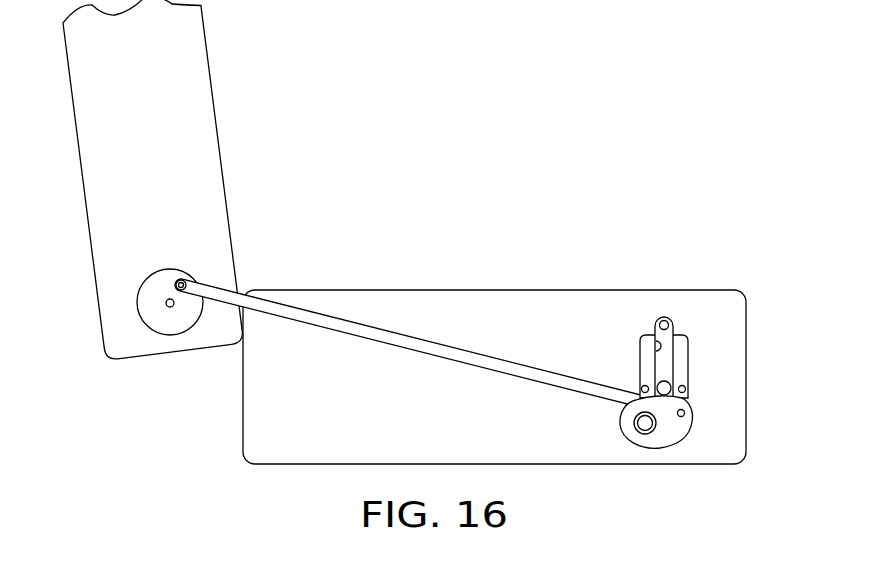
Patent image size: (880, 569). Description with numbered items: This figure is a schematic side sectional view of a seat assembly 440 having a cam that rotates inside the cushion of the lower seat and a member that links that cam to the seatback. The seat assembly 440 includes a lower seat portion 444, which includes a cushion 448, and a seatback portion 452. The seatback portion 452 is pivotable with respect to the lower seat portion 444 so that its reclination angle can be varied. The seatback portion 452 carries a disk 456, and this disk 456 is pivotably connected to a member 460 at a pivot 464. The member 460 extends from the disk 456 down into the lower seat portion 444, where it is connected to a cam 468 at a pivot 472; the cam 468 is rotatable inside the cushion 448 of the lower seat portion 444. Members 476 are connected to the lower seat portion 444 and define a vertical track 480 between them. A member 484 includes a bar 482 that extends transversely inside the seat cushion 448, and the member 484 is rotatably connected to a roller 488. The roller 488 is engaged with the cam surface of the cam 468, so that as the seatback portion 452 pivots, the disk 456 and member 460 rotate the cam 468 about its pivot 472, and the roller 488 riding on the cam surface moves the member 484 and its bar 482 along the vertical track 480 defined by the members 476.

The seat assembly 440 is at (489, 122).
The lower seat portion 444 is at (697, 289).
The cushion 448 is at (530, 307).
The seatback portion 452 is at (187, 33).
The disk 456 is at (150, 297).
The member 460 is at (330, 316).
The pivot 464 is at (182, 280).
The cam 468 is at (620, 424).
The pivot 472 is at (684, 413).
The members 476 is at (642, 356).
The vertical track 480 is at (655, 331).
The bar 482 is at (662, 319).
The member 484 is at (667, 346).
The roller 488 is at (669, 386).